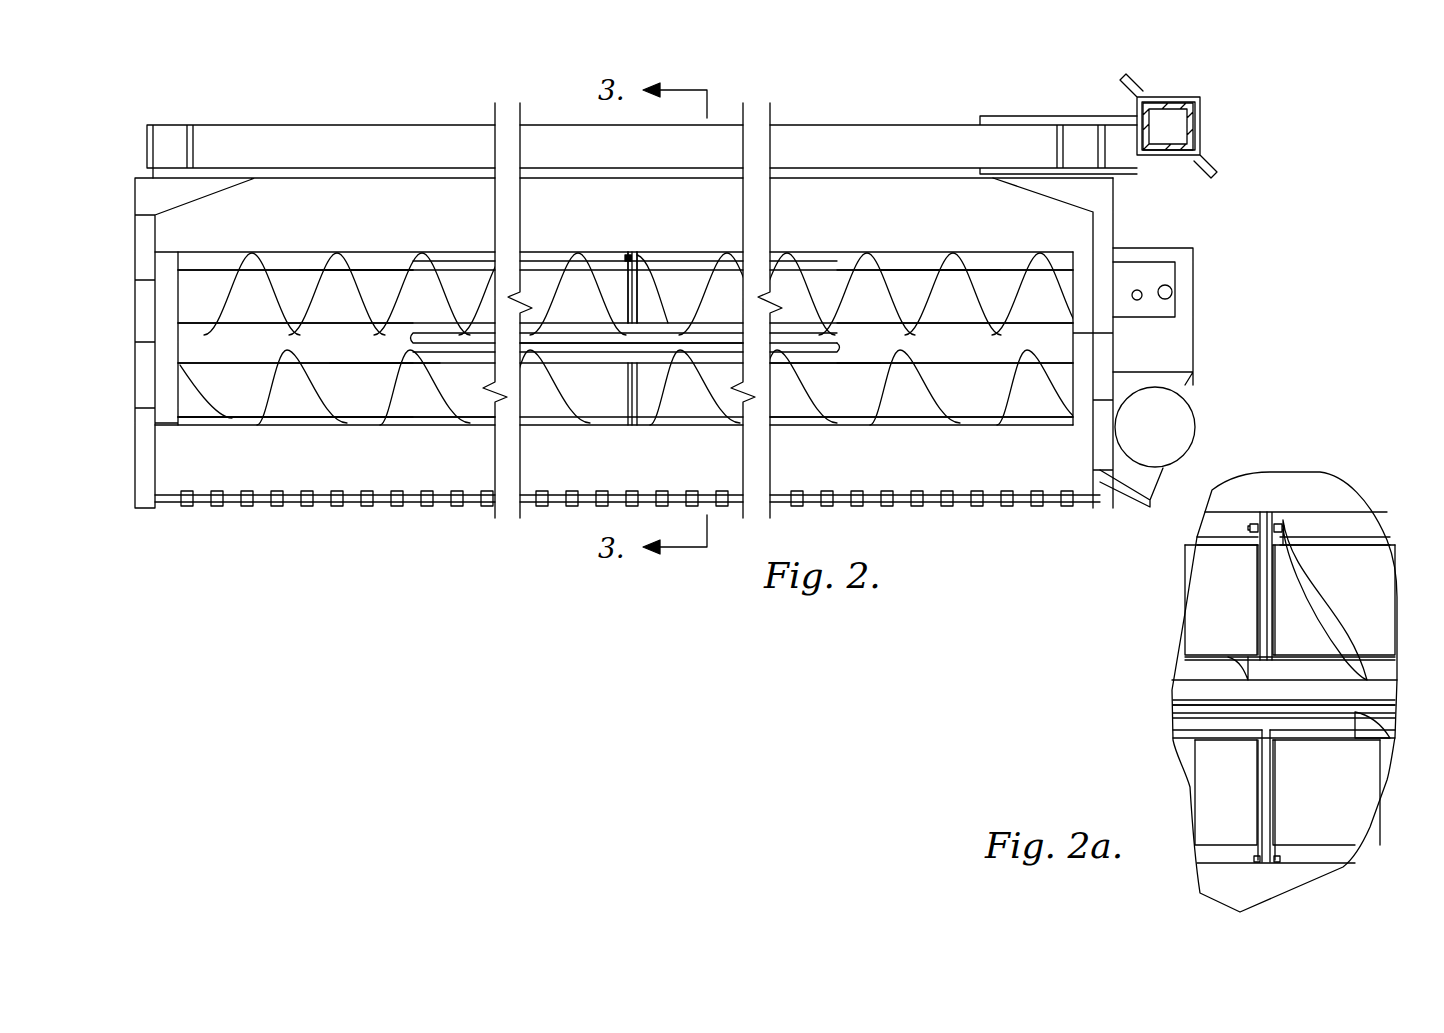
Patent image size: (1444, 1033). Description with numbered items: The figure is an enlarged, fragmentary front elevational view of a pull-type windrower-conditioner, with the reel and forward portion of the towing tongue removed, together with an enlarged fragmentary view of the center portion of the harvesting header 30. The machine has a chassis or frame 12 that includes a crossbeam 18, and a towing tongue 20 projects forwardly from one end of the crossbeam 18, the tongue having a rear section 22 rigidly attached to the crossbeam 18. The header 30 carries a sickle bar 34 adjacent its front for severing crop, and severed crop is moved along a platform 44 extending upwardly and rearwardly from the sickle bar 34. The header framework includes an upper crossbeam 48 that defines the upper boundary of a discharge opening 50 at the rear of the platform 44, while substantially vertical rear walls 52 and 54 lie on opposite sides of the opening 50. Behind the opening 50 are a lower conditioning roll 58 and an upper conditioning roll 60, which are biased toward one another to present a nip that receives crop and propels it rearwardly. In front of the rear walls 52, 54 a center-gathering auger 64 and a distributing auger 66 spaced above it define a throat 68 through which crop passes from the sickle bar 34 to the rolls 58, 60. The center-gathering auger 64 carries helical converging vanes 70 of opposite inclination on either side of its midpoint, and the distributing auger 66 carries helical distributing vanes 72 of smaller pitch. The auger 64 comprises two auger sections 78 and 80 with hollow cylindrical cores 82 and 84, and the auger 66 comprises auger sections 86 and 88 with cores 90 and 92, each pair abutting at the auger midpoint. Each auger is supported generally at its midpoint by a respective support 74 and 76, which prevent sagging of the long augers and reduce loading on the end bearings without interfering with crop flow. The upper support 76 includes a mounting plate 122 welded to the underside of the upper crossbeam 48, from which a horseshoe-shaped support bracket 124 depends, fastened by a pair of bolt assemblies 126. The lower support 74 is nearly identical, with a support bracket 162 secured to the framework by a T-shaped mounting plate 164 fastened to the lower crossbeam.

In FIG. 2, the chassis or frame 12 is at (830, 118).
In FIG. 2, the crossbeam 18 is at (332, 138).
In FIG. 2, the towing tongue 20 is at (1215, 118).
In FIG. 2, the rear section of tongue 22 is at (1165, 104).
In FIG. 2, the header 30 is at (158, 425).
In FIG. 2, the sickle bar 34 is at (960, 502).
In FIG. 2, the platform 44 is at (560, 480).
In FIG. 2A, the platform 44 is at (1305, 882).
In FIG. 2, the upper crossbeam 48 is at (614, 227).
In FIG. 2, the discharge opening 50 is at (413, 336).
In FIG. 2, the rear wall 52 is at (222, 348).
In FIG. 2, the rear wall 54 is at (965, 347).
In FIG. 2, the lower conditioning roll 58 is at (825, 356).
In FIG. 2A, the lower conditioning roll 58 is at (1380, 714).
In FIG. 2, the upper conditioning roll 60 is at (677, 265).
In FIG. 2A, the upper conditioning roll 60 is at (1355, 540).
In FIG. 2, the center-gathering auger 64 is at (1030, 426).
In FIG. 2A, the center-gathering auger 64 is at (1360, 800).
In FIG. 2, the distributing auger 66 is at (1000, 258).
In FIG. 2A, the distributing auger 66 is at (1375, 575).
In FIG. 2, the throat 68 is at (606, 356).
In FIG. 2A, the throat 68 is at (1186, 711).
In FIG. 2, the converging vanes 70 is at (470, 420).
In FIG. 2A, the converging vanes 70 is at (1367, 728).
In FIG. 2, the distributing vanes 72 is at (866, 262).
In FIG. 2A, the distributing vanes 72 is at (1283, 530).
In FIG. 2, the support 74 is at (620, 432).
In FIG. 2A, the support 74 is at (1250, 853).
In FIG. 2, the support 76 is at (622, 245).
In FIG. 2A, the support 76 is at (1256, 505).
In FIG. 2, the auger section 78 is at (385, 425).
In FIG. 2A, the auger section 78 is at (1208, 800).
In FIG. 2, the auger section 80 is at (918, 418).
In FIG. 2A, the auger section 80 is at (1360, 830).
In FIG. 2, the hollow cylindrical core 82 is at (385, 381).
In FIG. 2, the hollow cylindrical core 84 is at (825, 379).
In FIG. 2, the auger section 86 is at (380, 270).
In FIG. 2A, the auger section 86 is at (1193, 622).
In FIG. 2, the auger section 88 is at (920, 265).
In FIG. 2A, the auger section 88 is at (1378, 605).
In FIG. 2, the hollow cylindrical core 90 is at (356, 288).
In FIG. 2, the hollow cylindrical core 92 is at (940, 286).
In FIG. 2A, the mounting plate 122 is at (1273, 512).
In FIG. 2A, the support bracket 124 is at (1265, 590).
In FIG. 2A, the bolt assemblies 126 is at (1248, 528).
In FIG. 2A, the support bracket 162 is at (1265, 780).
In FIG. 2A, the T-shaped mounting plate 164 is at (1275, 856).